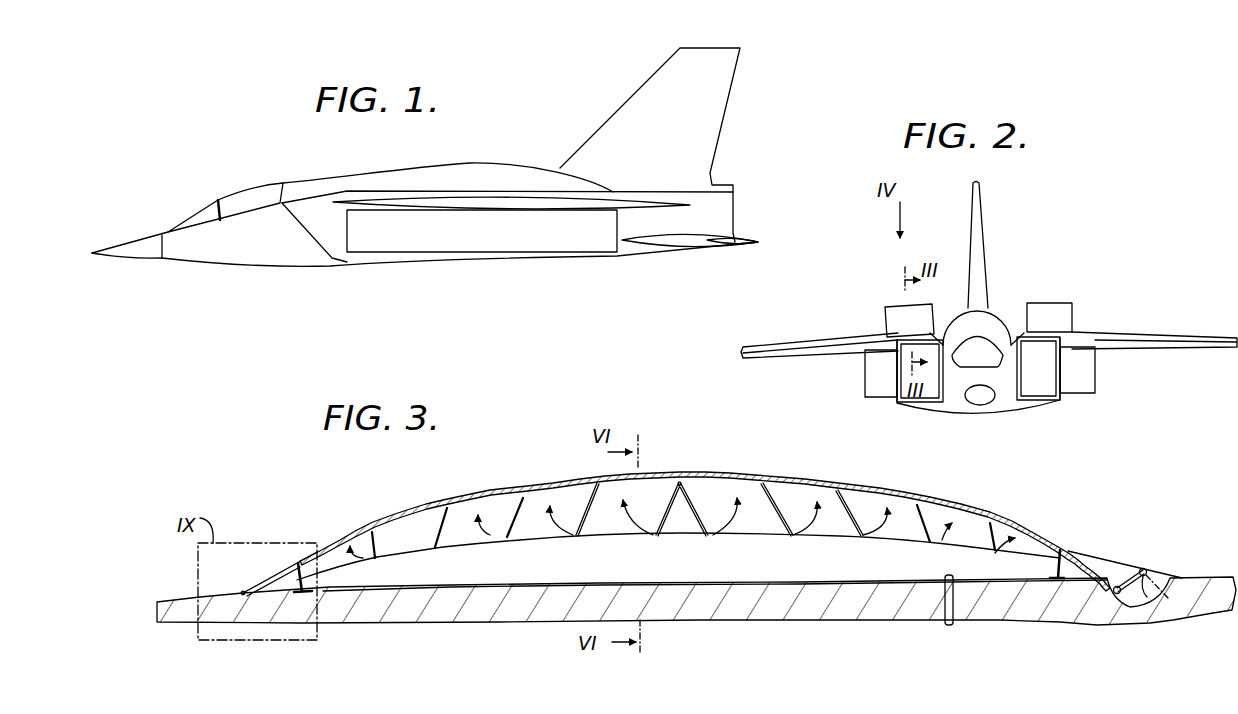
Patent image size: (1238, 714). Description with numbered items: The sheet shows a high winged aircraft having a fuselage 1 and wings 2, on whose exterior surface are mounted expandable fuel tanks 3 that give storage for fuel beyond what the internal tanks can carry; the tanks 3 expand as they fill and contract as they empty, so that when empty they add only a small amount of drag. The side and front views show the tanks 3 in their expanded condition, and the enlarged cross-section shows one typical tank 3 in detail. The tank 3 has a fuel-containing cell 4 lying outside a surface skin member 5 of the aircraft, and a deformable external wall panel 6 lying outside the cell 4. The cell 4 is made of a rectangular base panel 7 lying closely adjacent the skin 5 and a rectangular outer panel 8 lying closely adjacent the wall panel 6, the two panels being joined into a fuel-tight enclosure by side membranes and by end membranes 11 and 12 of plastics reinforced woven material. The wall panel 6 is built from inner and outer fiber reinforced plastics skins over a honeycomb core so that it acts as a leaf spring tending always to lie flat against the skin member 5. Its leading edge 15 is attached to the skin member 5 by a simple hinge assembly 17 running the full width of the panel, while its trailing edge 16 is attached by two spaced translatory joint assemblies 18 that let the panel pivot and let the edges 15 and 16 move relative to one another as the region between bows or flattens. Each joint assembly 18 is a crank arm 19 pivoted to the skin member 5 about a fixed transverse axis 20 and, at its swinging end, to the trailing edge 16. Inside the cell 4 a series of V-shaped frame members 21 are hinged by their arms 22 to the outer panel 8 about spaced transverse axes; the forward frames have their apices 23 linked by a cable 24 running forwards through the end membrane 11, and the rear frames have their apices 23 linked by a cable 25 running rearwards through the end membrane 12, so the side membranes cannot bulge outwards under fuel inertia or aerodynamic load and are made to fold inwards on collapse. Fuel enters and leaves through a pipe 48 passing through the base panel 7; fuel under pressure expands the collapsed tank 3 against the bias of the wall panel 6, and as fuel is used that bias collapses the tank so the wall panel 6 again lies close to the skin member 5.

In FIG. 1, the fuselage 1 is at (321, 182).
In FIG. 2, the fuselage 1 is at (998, 403).
In FIG. 1, the wings 2 is at (531, 211).
In FIG. 2, the wings 2 is at (1128, 333).
In FIG. 1, the expandable fuel tank 3 is at (465, 167).
In FIG. 2, the expandable fuel tank 3 is at (890, 307).
In FIG. 3, the expandable fuel tank 3 is at (518, 476).
In FIG. 3, the fuel-containing cell 4 is at (593, 521).
In FIG. 3, the surface skin member 5 is at (387, 615).
In FIG. 3, the deformable external wall panel 6 is at (820, 485).
In FIG. 3, the base panel 7 is at (777, 587).
In FIG. 3, the outer panel 8 is at (968, 515).
In FIG. 3, the end membrane 11 is at (298, 560).
In FIG. 3, the end membrane 12 is at (1064, 548).
In FIG. 3, the leading edge 15 is at (290, 568).
In FIG. 3, the trailing edge 16 is at (1104, 565).
In FIG. 3, the hinge assembly 17 is at (243, 592).
In FIG. 3, the translatory joint assembly 18 is at (1178, 564).
In FIG. 3, the crank arm 19 is at (1146, 597).
In FIG. 3, the fixed transverse axis 20 is at (1143, 568).
In FIG. 3, the V-shaped frame member 21 is at (498, 490).
In FIG. 3, the arms of the V-shape 22 is at (437, 510).
In FIG. 3, the apex 23 is at (512, 540).
In FIG. 3, the cable 24 is at (563, 537).
In FIG. 3, the cable 25 is at (737, 535).
In FIG. 3, the pipe 48 is at (943, 622).